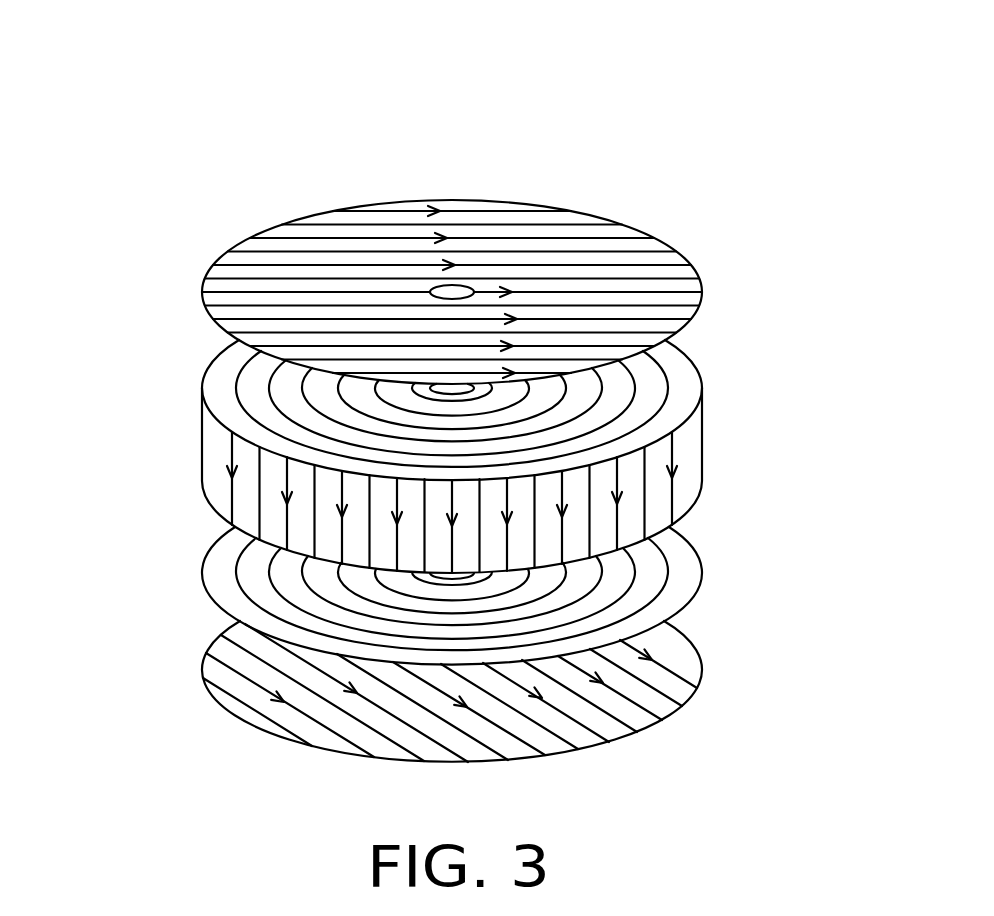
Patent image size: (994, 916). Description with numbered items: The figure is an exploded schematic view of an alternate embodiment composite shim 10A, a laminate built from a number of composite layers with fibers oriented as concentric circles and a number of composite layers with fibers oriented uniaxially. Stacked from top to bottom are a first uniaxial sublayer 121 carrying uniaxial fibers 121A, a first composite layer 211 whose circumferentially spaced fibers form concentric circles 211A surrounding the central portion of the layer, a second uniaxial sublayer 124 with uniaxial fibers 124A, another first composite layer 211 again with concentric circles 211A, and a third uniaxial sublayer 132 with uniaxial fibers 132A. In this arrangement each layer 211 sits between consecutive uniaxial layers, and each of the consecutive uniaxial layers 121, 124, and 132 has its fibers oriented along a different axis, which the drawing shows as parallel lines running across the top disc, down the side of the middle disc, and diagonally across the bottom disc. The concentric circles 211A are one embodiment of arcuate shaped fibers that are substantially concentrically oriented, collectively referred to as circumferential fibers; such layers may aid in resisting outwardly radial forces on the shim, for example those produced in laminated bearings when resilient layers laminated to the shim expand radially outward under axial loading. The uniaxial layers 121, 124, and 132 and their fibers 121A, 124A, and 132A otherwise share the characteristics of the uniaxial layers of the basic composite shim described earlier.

The composite shim 10A is at (450, 406).
The uniaxial sublayer 121 is at (702, 285).
The uniaxial fibers 121A is at (355, 240).
The first composite layer 211 is at (702, 380).
The concentric circles 211A is at (247, 417).
The uniaxial sublayer 124 is at (700, 490).
The uniaxial fibers 124A is at (699, 453).
The uniaxial sublayer 132 is at (700, 675).
The uniaxial fibers 132A is at (563, 725).